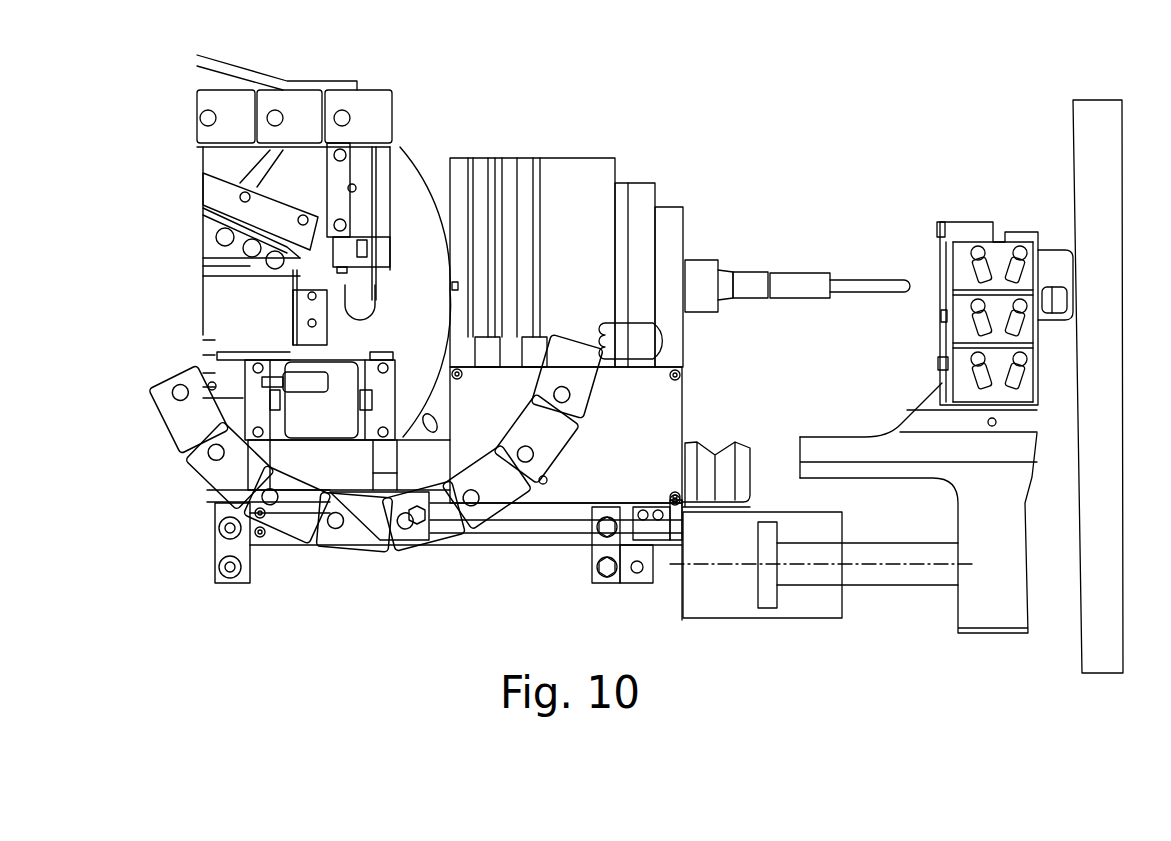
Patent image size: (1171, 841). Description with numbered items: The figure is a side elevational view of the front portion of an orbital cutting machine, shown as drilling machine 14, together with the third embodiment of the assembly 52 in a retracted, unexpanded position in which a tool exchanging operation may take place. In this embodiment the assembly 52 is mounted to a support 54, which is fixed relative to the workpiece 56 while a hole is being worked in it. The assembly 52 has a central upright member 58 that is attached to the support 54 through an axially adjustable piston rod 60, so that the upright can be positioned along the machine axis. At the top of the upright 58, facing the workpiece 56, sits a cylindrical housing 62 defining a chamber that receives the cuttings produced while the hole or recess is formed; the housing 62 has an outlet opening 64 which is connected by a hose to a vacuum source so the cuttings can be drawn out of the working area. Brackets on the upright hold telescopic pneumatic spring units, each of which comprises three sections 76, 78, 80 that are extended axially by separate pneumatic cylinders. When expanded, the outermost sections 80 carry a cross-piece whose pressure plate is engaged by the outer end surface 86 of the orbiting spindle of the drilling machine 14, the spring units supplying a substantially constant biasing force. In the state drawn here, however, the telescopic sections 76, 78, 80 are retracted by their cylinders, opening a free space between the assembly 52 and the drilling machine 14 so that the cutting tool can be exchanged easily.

The drilling machine 14 is at (551, 128).
The assembly 52 is at (981, 262).
The support 54 is at (750, 612).
The workpiece 56 is at (1112, 138).
The central upright member 58 is at (1013, 555).
The axially adjustable piston rod 60 is at (876, 578).
The cylindrical housing 62 is at (1050, 257).
The outlet opening 64 is at (1056, 305).
The telescopic spring section 76 is at (944, 371).
The telescopic spring section 78 is at (944, 316).
The outermost telescopic spring section 80 is at (944, 263).
The outer end surface of the orbiting spindle 86 is at (686, 338).